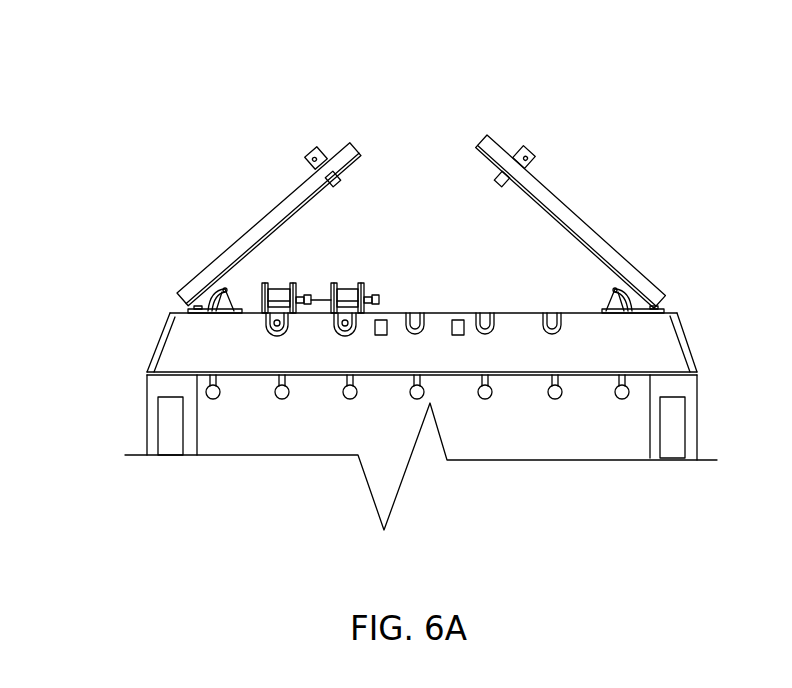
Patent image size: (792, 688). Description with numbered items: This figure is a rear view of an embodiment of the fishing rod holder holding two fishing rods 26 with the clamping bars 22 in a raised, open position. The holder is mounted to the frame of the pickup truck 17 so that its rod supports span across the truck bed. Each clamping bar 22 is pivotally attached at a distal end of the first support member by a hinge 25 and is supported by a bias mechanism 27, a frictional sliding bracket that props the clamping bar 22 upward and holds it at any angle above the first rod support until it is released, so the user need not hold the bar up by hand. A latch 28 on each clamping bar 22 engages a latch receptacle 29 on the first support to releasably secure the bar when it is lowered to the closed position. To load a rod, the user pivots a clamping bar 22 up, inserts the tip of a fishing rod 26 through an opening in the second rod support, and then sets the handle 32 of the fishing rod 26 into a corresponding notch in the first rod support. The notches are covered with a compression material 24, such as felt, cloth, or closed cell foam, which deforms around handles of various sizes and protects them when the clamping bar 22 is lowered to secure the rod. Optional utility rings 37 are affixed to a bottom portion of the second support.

The frame of the pickup truck 17 is at (143, 423).
The clamping bar 22 is at (487, 265).
The compression material 24 is at (352, 334).
The hinge 25 is at (307, 153).
The fishing rod 26 is at (347, 280).
The bias mechanism 27 is at (218, 288).
The latch 28 is at (500, 183).
The latch receptacle 29 is at (458, 337).
The handle of the fishing rod 32 is at (277, 325).
The utility rings 37 is at (345, 396).